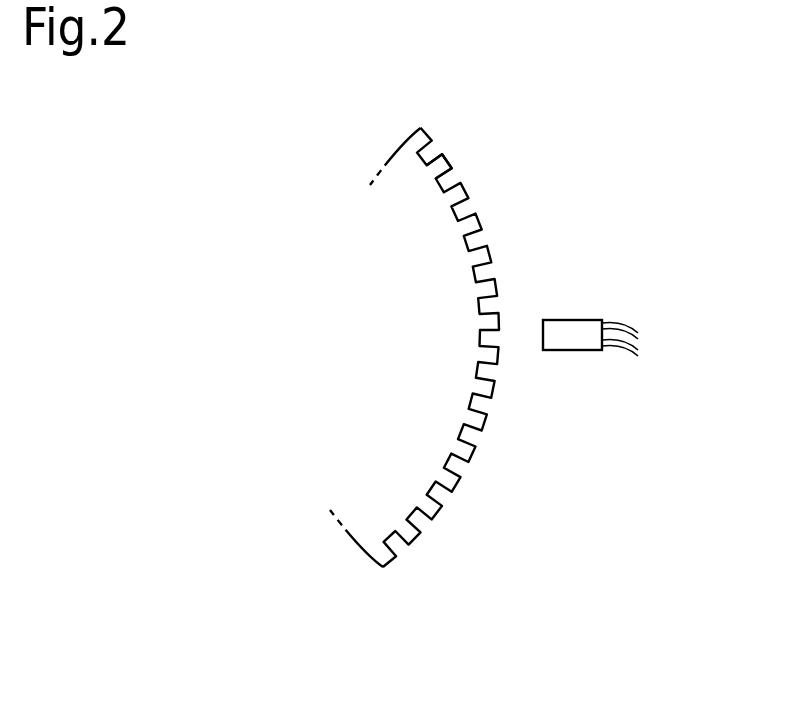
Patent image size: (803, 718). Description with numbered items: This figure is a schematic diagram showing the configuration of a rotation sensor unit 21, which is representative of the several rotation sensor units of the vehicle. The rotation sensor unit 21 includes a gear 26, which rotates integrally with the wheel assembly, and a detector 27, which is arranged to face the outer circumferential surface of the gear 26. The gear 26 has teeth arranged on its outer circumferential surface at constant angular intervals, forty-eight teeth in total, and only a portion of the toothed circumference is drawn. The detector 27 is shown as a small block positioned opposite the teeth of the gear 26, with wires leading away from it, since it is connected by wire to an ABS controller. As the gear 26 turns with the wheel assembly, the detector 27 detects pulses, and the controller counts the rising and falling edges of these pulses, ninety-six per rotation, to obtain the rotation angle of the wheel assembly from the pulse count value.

The rotation sensor unit 21 is at (547, 152).
The gear 26 is at (430, 197).
The detector 27 is at (572, 320).